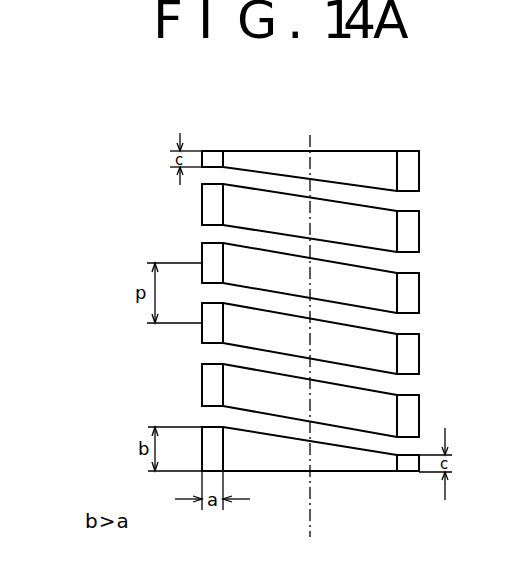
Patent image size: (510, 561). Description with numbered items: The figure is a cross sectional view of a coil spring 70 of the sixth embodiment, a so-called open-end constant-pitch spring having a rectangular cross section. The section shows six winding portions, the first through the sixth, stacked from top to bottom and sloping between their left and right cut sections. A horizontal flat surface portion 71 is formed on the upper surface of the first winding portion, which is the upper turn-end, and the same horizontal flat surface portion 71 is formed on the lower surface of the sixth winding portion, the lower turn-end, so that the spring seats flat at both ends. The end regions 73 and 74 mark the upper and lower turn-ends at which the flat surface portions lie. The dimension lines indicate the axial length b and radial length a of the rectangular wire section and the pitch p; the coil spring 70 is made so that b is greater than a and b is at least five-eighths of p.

The coil spring 70 is at (256, 312).
The horizontal flat surface portion 71 is at (364, 150).
The first end portion of coil 73 is at (217, 156).
The second end portion of coil 74 is at (407, 472).